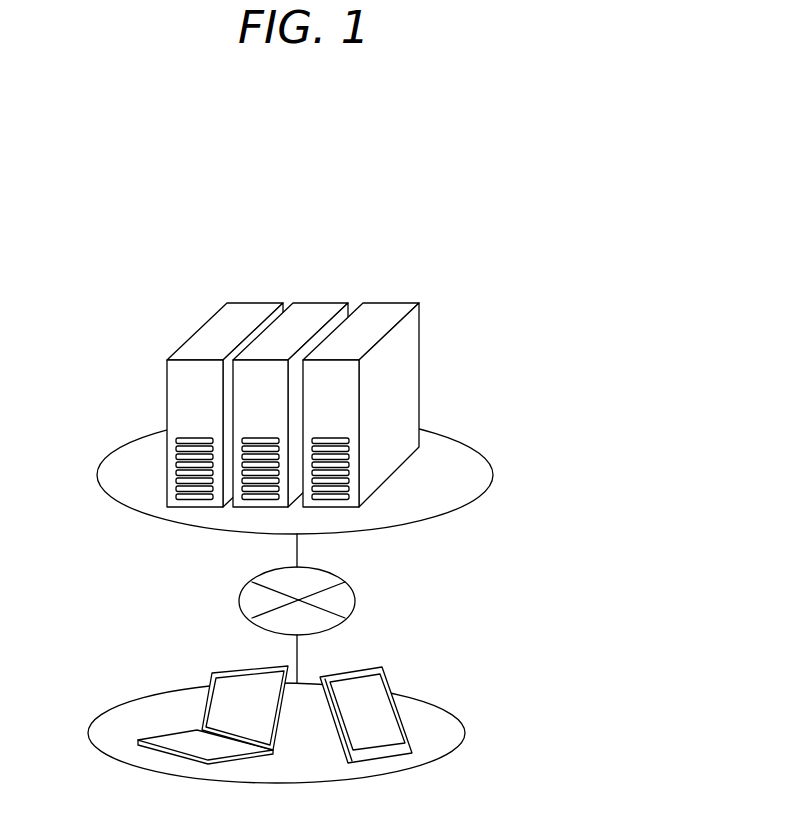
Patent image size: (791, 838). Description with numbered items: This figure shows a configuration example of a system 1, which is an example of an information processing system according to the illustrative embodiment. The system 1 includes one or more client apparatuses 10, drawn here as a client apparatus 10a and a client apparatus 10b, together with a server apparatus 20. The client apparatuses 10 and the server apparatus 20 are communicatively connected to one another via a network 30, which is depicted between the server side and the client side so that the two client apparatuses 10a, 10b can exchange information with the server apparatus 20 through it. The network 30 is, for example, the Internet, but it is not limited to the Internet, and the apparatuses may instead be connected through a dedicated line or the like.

The system 1 is at (630, 320).
The client apparatuses 10 is at (302, 680).
The client apparatus 10a is at (217, 702).
The client apparatus 10b is at (378, 715).
The server apparatus 20 is at (148, 335).
The network 30 is at (363, 597).